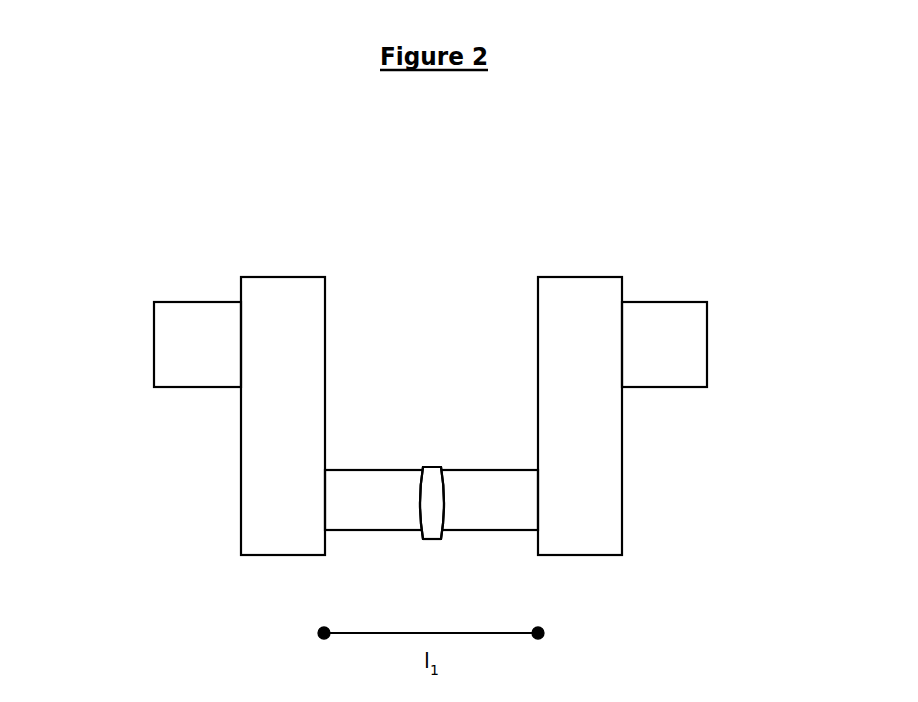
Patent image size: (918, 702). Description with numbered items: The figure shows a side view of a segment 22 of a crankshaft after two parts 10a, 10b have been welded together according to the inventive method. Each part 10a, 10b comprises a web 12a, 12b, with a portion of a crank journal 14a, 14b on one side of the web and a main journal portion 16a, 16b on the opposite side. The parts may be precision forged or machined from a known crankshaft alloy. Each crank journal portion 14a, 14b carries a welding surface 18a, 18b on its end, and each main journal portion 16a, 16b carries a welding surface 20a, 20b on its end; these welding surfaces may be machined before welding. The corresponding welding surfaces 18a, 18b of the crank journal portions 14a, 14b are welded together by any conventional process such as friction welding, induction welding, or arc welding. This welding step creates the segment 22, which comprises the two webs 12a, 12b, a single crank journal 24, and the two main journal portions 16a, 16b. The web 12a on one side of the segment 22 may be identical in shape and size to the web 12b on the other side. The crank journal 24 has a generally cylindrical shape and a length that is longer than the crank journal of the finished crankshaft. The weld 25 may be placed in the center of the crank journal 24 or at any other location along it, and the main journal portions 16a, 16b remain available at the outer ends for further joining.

The segment 22 is at (405, 216).
The part 10a is at (238, 256).
The part 10b is at (629, 256).
The web 12a is at (240, 480).
The web 12b is at (623, 480).
The portion of the crank journal 14a is at (391, 470).
The portion of the crank journal 14b is at (470, 470).
The main journal portion 16a is at (188, 388).
The main journal portion 16b is at (670, 388).
The welding surface 18a is at (418, 507).
The welding surface 18b is at (446, 507).
The welding surface 20a is at (154, 338).
The welding surface 20b is at (707, 335).
The crank journal 24 is at (428, 432).
The weld 25 is at (431, 540).